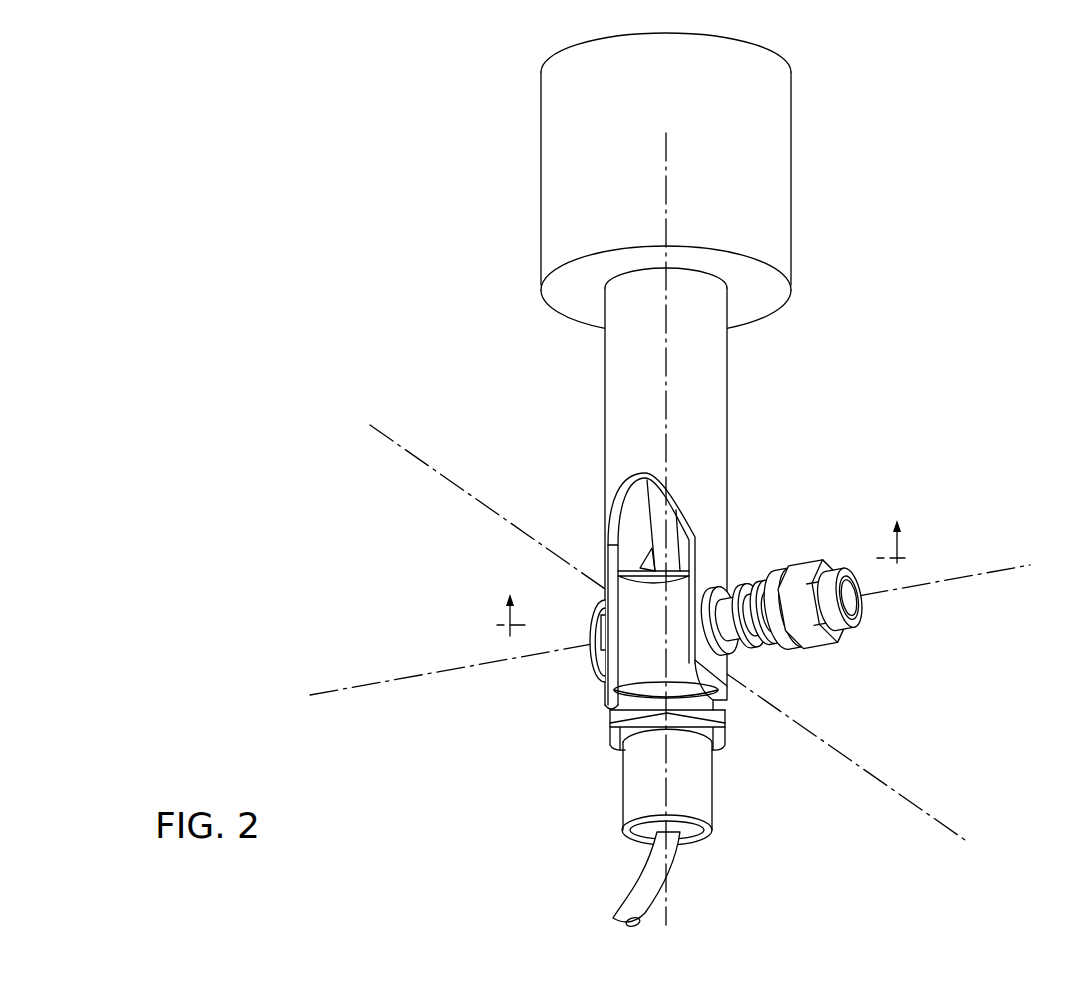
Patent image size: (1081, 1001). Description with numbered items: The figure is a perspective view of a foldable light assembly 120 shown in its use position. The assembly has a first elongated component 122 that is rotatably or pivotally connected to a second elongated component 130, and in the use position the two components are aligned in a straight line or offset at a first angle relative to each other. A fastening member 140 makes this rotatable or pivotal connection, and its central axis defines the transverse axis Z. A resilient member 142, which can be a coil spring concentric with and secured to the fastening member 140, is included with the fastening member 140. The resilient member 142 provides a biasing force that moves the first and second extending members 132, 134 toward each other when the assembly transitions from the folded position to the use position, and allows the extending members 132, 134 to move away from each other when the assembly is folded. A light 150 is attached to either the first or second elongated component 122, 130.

The foldable light assembly 120 is at (506, 51).
The light 150 is at (762, 147).
The second elongated component 130 is at (638, 420).
The resilient member 142 is at (745, 582).
The fastening member 140 is at (598, 663).
The second extending member 134 is at (723, 663).
The first extending member 132 is at (605, 692).
The first elongated component 122 is at (645, 773).